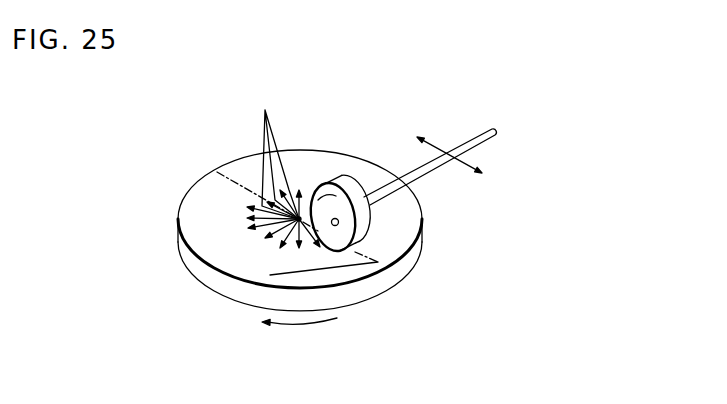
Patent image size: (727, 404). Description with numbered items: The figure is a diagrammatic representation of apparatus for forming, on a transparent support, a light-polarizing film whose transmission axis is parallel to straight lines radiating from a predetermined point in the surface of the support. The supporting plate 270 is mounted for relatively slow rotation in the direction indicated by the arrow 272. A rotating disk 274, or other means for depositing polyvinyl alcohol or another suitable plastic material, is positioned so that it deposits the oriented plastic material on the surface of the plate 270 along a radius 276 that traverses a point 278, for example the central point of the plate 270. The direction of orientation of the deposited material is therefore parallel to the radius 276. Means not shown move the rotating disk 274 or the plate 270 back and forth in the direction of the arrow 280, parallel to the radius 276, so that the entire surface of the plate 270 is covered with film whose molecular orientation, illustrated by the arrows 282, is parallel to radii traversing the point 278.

The supporting plate 270 is at (190, 252).
The arrow 272 is at (307, 325).
The rotating disk 274 is at (350, 190).
The radius 276 is at (270, 275).
The point 278 is at (299, 219).
The arrow 280 is at (433, 146).
The arrows 282 is at (283, 169).